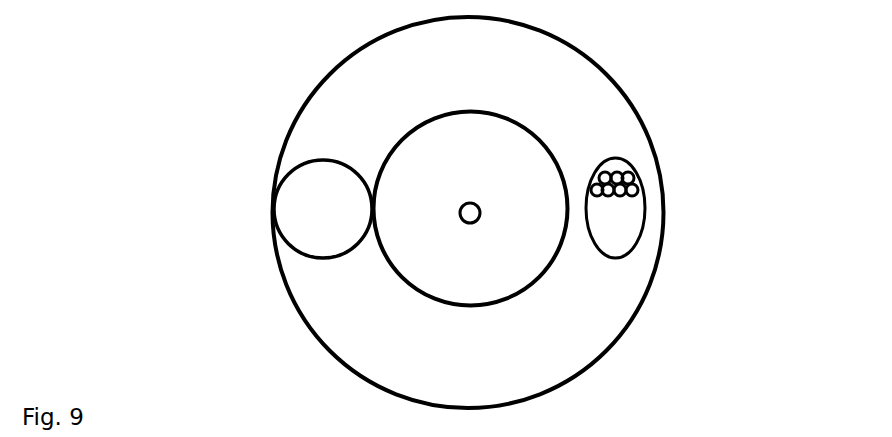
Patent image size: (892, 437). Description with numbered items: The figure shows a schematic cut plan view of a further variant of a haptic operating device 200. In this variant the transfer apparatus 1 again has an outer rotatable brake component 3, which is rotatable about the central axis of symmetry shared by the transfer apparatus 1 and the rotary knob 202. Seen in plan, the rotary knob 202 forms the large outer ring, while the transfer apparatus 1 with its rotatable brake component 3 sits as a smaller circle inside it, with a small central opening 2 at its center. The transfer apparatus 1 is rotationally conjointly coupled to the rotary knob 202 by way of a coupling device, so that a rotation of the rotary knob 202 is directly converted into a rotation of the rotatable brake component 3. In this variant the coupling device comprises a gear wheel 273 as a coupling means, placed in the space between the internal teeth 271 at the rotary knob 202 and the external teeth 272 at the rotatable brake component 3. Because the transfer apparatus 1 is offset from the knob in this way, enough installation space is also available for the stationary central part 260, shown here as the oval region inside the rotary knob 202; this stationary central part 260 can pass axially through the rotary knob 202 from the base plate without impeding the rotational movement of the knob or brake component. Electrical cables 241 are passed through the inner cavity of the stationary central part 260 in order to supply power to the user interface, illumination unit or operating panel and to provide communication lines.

The device 200 is at (297, 53).
The rotary knob 202 is at (603, 67).
The transfer apparatus 1 is at (424, 108).
The central opening 2 is at (458, 221).
The rotatable brake component 3 is at (558, 275).
The gear wheel 273 is at (303, 162).
The stationary central part 260 is at (632, 165).
The electrical cables 241 is at (636, 189).
The external teeth 272 is at (464, 306).
The internal teeth 271 is at (333, 347).